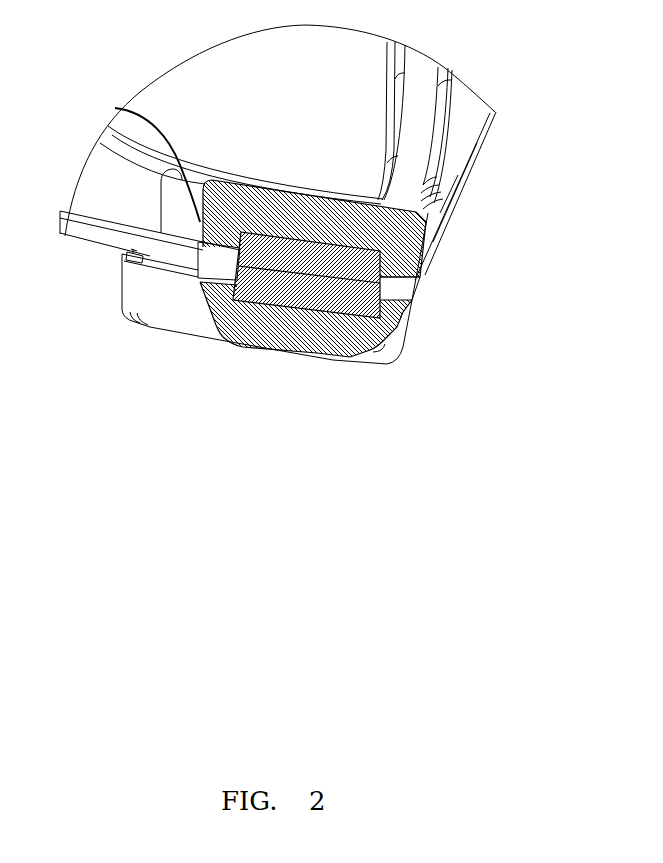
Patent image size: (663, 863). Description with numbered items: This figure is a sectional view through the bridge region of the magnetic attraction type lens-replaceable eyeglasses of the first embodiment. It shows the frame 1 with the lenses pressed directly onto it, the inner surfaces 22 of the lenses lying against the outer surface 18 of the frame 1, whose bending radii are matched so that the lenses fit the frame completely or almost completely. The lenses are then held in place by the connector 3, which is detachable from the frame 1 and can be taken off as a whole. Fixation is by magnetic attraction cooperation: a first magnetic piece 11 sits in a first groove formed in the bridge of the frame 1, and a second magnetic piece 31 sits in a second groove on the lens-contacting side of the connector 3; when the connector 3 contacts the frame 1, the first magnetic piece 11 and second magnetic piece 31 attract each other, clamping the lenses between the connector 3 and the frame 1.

The frame 1 is at (393, 246).
The first magnetic piece 11 is at (393, 290).
The connector 3 is at (242, 340).
The second magnetic piece 31 is at (338, 312).
The outer surface of the frame 18 is at (115, 108).
The inner surfaces of the lenses 22 is at (222, 245).